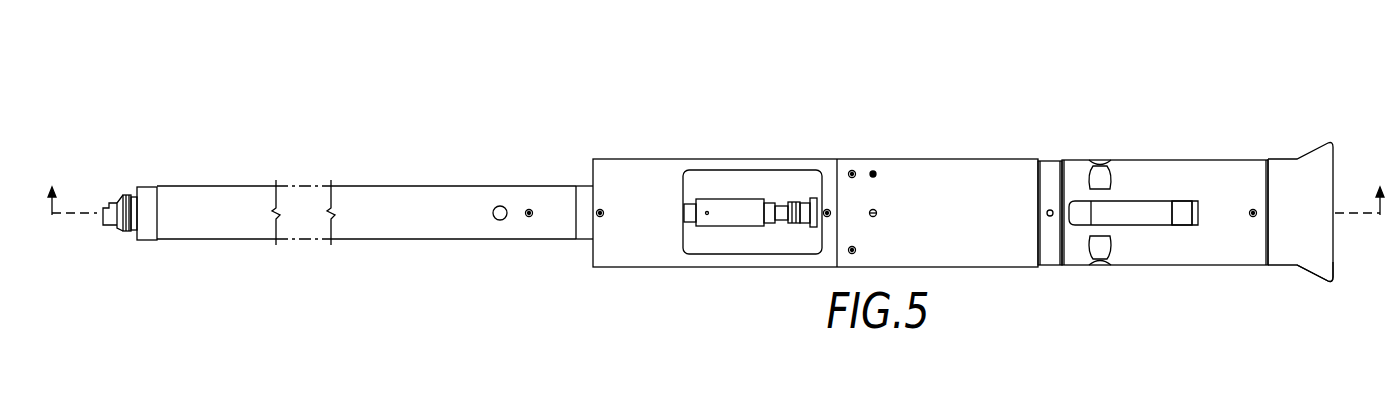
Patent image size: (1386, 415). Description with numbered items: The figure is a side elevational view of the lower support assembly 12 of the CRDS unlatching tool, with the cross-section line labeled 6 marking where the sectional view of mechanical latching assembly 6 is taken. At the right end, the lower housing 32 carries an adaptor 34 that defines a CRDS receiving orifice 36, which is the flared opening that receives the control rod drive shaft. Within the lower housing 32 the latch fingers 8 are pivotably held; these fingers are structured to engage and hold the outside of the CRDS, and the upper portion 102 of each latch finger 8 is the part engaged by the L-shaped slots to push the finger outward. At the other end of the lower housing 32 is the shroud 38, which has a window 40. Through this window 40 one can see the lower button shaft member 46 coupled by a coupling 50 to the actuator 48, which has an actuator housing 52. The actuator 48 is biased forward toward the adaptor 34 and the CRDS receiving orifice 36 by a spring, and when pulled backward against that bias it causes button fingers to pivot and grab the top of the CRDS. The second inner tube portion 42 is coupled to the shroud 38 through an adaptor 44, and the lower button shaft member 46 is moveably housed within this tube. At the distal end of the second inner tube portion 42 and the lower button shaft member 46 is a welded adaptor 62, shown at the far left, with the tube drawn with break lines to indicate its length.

The lower support assembly 12 is at (578, 113).
The welded adaptor 62 is at (145, 187).
The second inner tube portion 42 is at (468, 185).
The adaptor 44 is at (582, 185).
The shroud 38 is at (658, 267).
The window 40 is at (717, 182).
The lower button shaft member 46 is at (691, 206).
The coupling 50 is at (735, 227).
The actuator 48 is at (783, 201).
The actuator housing 52 is at (813, 195).
The lower housing 32 is at (1220, 267).
The upper end of latch finger 102 is at (1083, 203).
The latch fingers 8 is at (1185, 210).
The adaptor 34 is at (1325, 162).
The CRDS receiving orifice 36 is at (1333, 262).
The mechanical latching assembly 6 is at (716, 222).